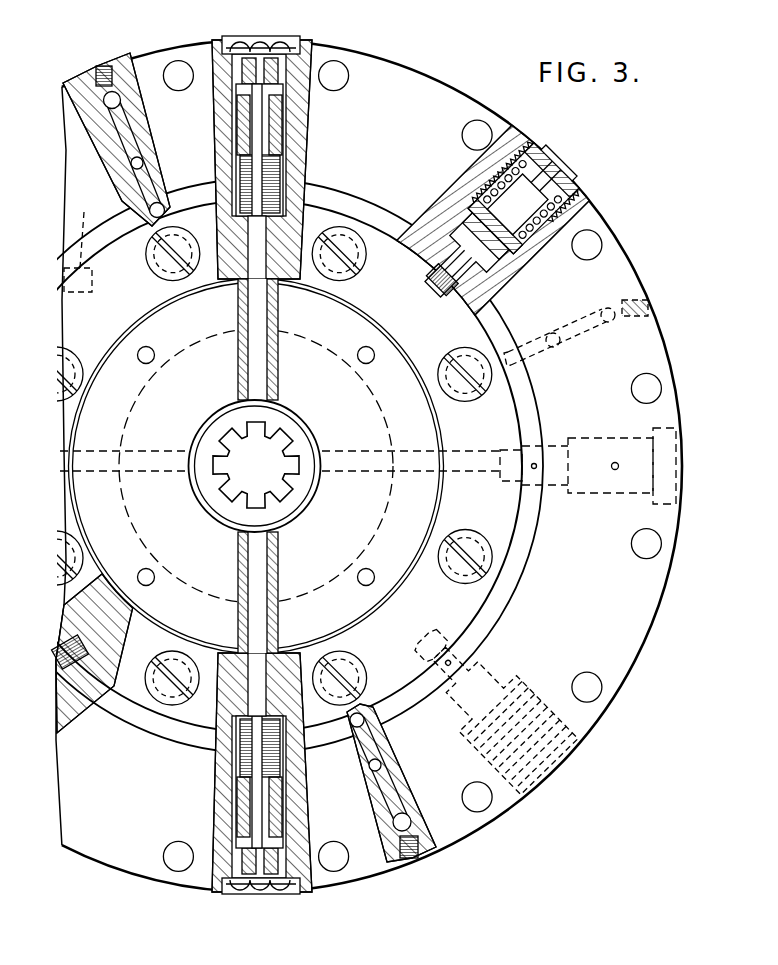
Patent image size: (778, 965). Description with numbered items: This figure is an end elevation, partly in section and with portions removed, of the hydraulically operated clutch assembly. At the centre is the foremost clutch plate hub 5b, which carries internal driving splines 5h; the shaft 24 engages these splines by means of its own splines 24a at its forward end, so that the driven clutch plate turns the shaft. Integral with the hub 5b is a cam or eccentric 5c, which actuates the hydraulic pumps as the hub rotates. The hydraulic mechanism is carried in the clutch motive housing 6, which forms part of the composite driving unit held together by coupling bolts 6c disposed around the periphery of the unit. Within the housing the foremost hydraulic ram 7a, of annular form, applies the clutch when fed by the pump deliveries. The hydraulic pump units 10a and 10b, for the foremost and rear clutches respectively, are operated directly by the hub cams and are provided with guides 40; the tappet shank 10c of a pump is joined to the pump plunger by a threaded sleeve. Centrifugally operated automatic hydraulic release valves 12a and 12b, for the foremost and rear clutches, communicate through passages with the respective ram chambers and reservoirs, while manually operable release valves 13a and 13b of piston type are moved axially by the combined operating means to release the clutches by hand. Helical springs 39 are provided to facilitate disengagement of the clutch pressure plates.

The foremost clutch plate hub 5b is at (278, 468).
The cam or eccentric 5c is at (282, 466).
The internal driving splines 5h is at (291, 472).
The clutch motive housing 6 is at (398, 125).
The coupling bolts 6c is at (588, 247).
The foremost hydraulic ram 7a is at (530, 417).
The hydraulic pump unit for foremost clutch 10a is at (312, 57).
The hydraulic pump unit for rear clutch 10b is at (640, 473).
The tappet shank 10c is at (257, 312).
The centrifugally operated automatic hydraulic release valve 12a is at (573, 197).
The centrifugally operated automatic hydraulic release valve 12b is at (533, 740).
The manually operable release valve 13a is at (115, 97).
The manually operable release valve 13b is at (613, 316).
The shaft 24 is at (291, 472).
The splines 24a is at (284, 500).
The helical springs 39 is at (184, 263).
The guides 40 is at (271, 466).